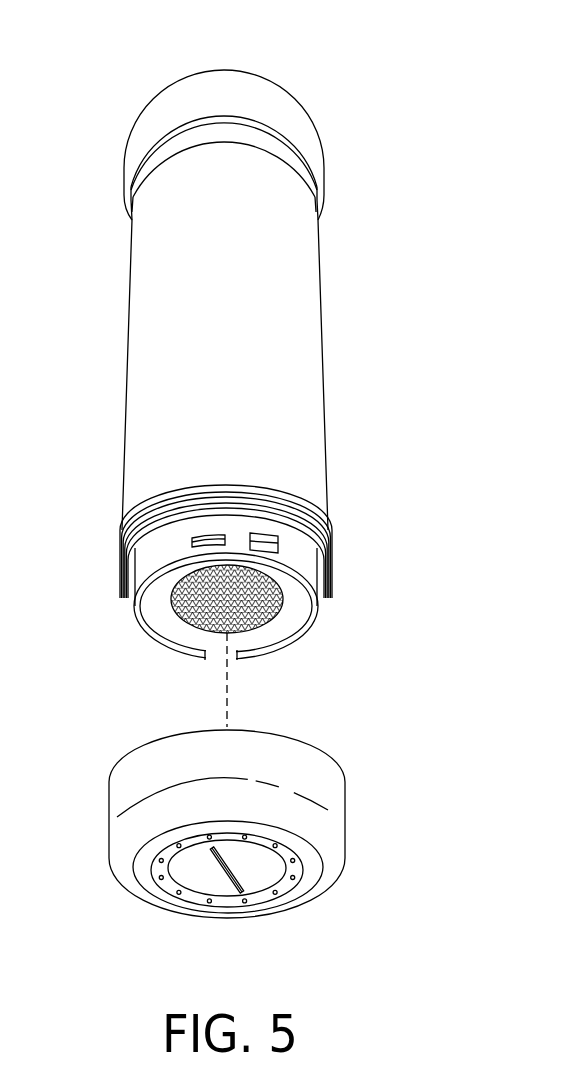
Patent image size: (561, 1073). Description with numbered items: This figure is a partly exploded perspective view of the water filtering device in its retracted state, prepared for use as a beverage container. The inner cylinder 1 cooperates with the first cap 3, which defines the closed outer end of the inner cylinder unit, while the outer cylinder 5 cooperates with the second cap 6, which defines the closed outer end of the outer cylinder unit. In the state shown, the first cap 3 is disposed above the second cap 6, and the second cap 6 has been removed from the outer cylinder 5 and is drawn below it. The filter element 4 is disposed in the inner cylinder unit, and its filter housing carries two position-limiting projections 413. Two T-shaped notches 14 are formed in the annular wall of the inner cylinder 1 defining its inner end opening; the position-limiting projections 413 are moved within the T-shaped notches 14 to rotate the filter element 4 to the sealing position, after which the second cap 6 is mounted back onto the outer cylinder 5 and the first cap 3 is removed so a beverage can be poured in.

The inner cylinder 1 is at (153, 550).
The first cap 3 is at (273, 103).
The filter element 4 is at (292, 613).
The outer cylinder 5 is at (283, 353).
The second cap 6 is at (358, 826).
The T-shaped notches 14 is at (227, 543).
The position-limiting projections 413 is at (273, 538).